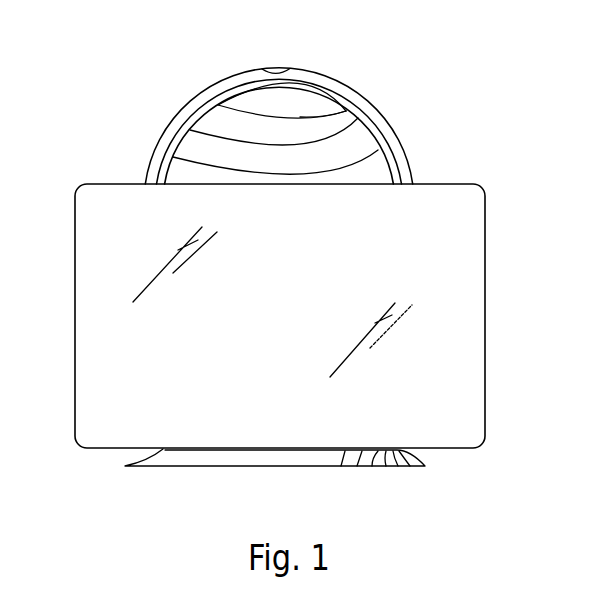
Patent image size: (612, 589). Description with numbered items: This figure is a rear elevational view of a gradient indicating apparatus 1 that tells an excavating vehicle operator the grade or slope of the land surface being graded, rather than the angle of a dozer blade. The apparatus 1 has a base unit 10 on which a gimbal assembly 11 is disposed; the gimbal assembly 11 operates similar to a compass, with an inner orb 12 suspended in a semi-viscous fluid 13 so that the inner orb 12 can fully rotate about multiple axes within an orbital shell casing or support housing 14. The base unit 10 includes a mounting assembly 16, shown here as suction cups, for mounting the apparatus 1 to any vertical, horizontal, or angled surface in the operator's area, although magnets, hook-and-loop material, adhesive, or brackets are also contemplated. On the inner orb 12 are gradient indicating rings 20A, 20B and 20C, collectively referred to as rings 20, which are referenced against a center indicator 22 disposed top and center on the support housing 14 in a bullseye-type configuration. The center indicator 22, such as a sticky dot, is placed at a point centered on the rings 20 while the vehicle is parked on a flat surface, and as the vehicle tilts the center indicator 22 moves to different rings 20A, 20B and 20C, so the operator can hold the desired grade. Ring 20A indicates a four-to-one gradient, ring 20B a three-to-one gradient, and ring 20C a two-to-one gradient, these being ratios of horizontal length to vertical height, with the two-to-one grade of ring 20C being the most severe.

The gradient indicating apparatus 1 is at (84, 82).
The base unit 10 is at (459, 334).
The gimbal assembly 11 is at (229, 77).
The inner orb 12 is at (183, 140).
The semi-viscous fluid 13 is at (303, 113).
The support housing 14 is at (186, 113).
The mounting assembly 16 is at (366, 466).
The gradient rings 20 is at (518, 52).
The gradient ring 20A is at (338, 100).
The gradient ring 20B is at (345, 127).
The gradient ring 20C is at (360, 162).
The center indicator 22 is at (281, 68).